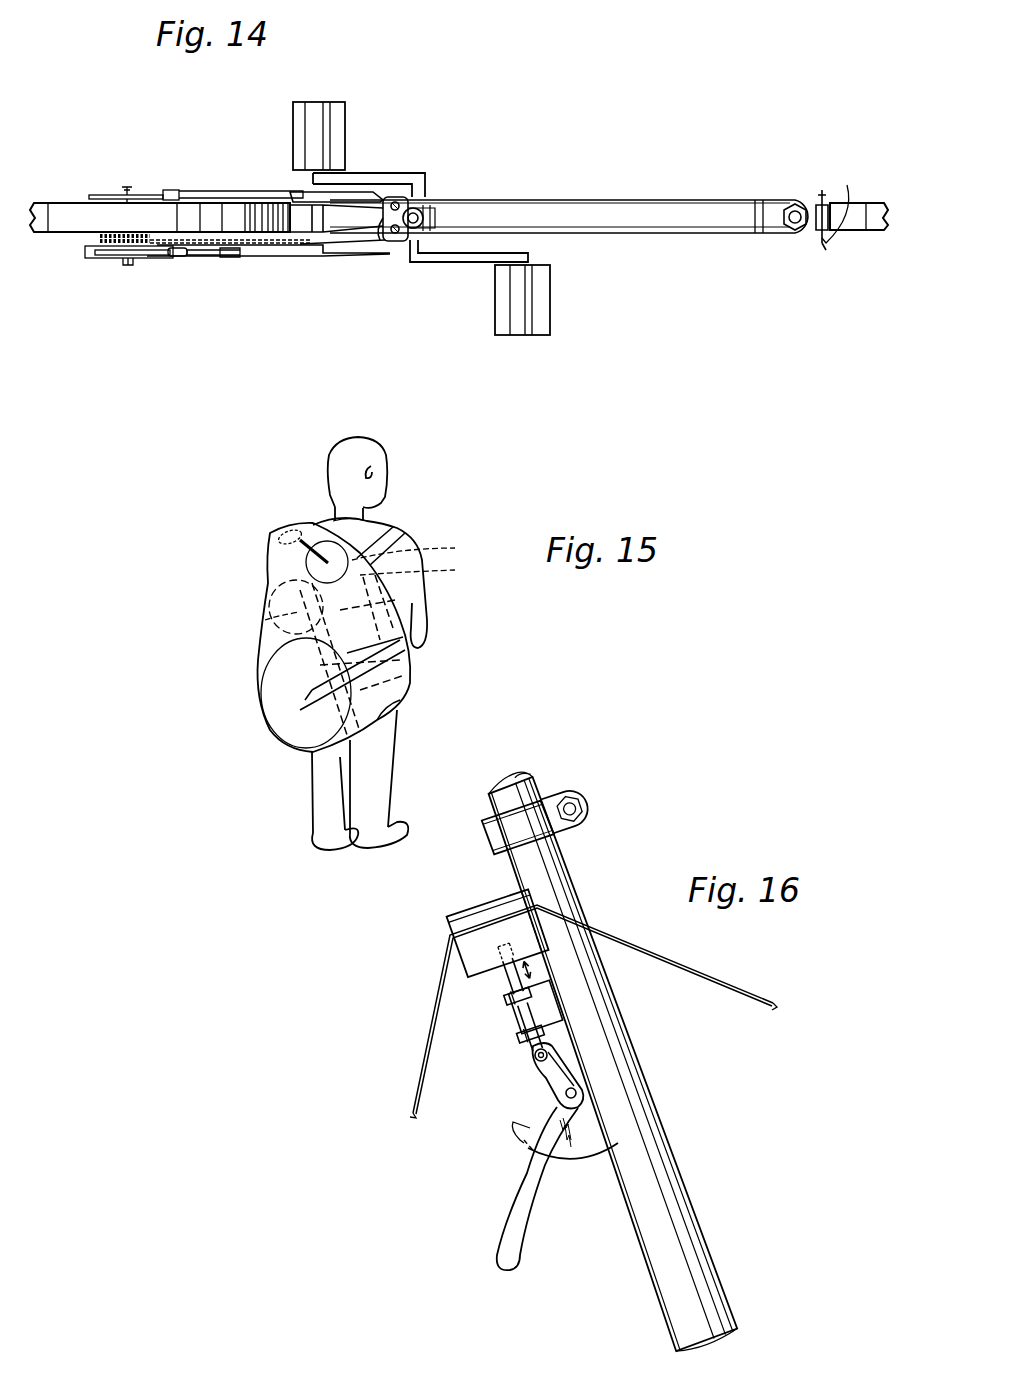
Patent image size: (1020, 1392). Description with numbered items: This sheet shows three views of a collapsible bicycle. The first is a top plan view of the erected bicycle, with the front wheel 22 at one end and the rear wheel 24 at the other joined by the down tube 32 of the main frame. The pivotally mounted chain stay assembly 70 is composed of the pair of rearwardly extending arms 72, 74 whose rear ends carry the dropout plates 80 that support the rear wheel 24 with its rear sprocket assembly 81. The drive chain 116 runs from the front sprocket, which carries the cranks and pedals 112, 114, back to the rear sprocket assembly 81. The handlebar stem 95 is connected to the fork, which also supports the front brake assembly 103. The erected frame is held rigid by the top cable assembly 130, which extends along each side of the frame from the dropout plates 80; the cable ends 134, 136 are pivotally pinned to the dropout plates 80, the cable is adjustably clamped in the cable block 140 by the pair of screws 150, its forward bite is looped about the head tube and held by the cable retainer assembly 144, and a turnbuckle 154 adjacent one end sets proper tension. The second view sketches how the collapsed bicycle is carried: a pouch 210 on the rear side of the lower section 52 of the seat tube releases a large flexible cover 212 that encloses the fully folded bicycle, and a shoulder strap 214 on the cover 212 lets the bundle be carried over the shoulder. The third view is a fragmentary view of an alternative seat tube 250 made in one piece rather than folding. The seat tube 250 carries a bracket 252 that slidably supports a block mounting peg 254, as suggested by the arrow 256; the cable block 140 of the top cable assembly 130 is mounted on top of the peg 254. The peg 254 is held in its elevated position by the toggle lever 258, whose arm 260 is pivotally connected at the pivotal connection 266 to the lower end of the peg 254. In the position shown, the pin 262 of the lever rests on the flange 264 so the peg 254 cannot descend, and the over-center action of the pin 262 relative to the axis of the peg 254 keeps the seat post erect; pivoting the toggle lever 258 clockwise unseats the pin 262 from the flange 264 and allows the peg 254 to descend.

In FIG. 14, the front wheel 22 is at (870, 232).
In FIG. 15, the front wheel 22 is at (300, 748).
In FIG. 14, the rear wheel 24 is at (50, 222).
In FIG. 15, the rear wheel 24 is at (265, 620).
In FIG. 14, the down tube 32 is at (665, 225).
In FIG. 15, the lower section of seat tube 52 is at (395, 557).
In FIG. 15, the chain stay assembly 70 is at (290, 595).
In FIG. 14, the arm 72 is at (294, 257).
In FIG. 14, the arm 74 is at (265, 192).
In FIG. 14, the dropout plates 80 is at (142, 190).
In FIG. 14, the rear sprocket assembly 81 is at (88, 249).
In FIG. 14, the handlebar stem 95 is at (795, 204).
In FIG. 14, the front brake assembly 103 is at (832, 257).
In FIG. 14, the crank and pedal 112 is at (378, 175).
In FIG. 14, the crank and pedal 114 is at (346, 105).
In FIG. 14, the drive chain 116 is at (356, 247).
In FIG. 14, the top cable assembly 130 is at (763, 235).
In FIG. 16, the top cable assembly 130 is at (619, 934).
In FIG. 14, the cable end 134 is at (177, 257).
In FIG. 14, the cable end 136 is at (173, 190).
In FIG. 14, the cable block 140 is at (383, 240).
In FIG. 16, the cable block 140 is at (470, 915).
In FIG. 14, the cable retainer assembly 144 is at (826, 196).
In FIG. 14, the screws 150 is at (400, 205).
In FIG. 14, the turnbuckle 154 is at (230, 257).
In FIG. 15, the pouch 210 is at (437, 573).
In FIG. 15, the cover 212 is at (395, 705).
In FIG. 15, the shoulder strap 214 is at (385, 527).
In FIG. 16, the seat tube 250 is at (632, 1083).
In FIG. 16, the bracket 252 is at (555, 1010).
In FIG. 16, the block mounting peg 254 is at (512, 990).
In FIG. 16, the arrow 256 is at (545, 970).
In FIG. 16, the toggle lever 258 is at (510, 1167).
In FIG. 16, the arm 260 is at (552, 1070).
In FIG. 16, the pin 262 is at (578, 1093).
In FIG. 16, the flange 264 is at (575, 1150).
In FIG. 16, the pivotal connection 266 is at (534, 1055).